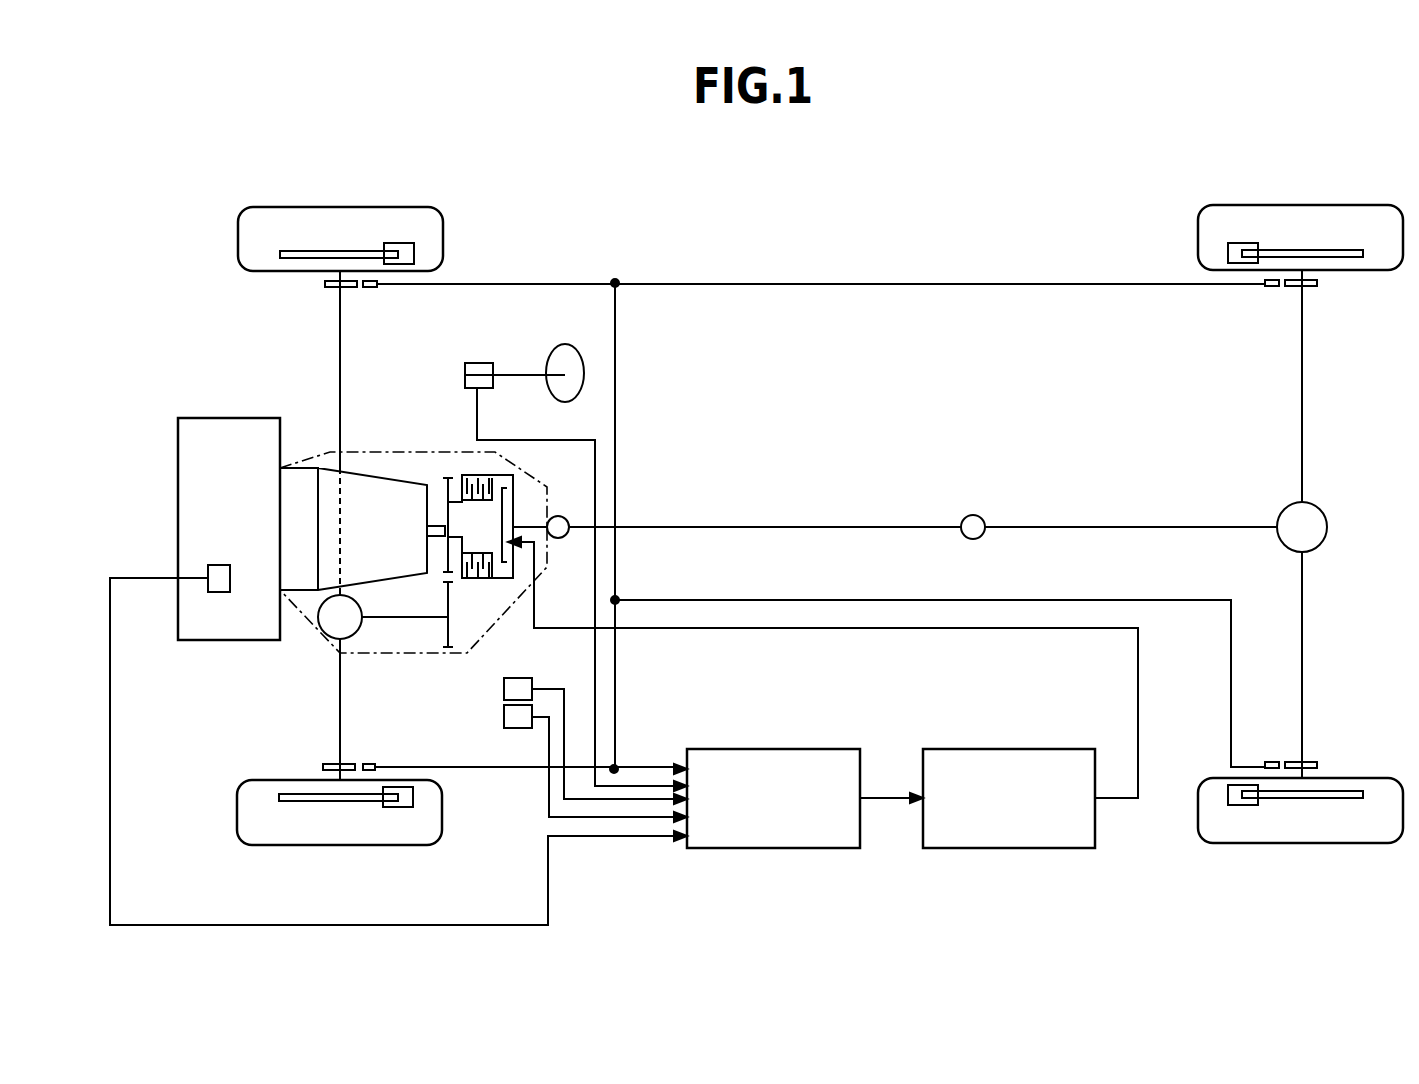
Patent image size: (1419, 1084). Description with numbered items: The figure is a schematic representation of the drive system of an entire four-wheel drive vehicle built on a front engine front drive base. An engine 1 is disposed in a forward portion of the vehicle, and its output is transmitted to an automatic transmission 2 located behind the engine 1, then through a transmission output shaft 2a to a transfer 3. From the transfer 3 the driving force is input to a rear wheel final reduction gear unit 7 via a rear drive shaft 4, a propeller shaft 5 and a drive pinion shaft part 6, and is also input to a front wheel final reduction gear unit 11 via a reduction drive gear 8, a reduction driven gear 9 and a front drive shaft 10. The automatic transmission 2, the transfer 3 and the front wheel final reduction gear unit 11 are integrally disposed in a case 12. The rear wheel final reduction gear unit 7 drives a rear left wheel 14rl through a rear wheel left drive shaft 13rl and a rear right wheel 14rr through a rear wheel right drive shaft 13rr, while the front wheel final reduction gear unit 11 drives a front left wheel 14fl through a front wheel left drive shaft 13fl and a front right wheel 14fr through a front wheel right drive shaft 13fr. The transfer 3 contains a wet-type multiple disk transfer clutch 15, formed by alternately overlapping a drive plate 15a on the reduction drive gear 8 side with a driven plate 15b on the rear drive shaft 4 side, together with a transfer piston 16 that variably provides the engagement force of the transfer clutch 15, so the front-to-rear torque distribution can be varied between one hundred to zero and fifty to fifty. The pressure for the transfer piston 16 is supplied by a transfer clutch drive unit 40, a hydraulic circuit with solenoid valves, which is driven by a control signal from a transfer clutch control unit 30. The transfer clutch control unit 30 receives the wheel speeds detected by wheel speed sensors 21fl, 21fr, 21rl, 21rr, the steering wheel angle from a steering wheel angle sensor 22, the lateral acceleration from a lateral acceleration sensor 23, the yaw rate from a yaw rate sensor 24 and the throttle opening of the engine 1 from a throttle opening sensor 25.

The engine 1 is at (178, 497).
The automatic transmission 2 is at (330, 467).
The transmission output shaft 2a is at (436, 525).
The transfer 3 is at (591, 525).
The rear drive shaft 4 is at (530, 524).
The propeller shaft 5 is at (800, 526).
The drive pinion shaft part 6 is at (1065, 526).
The rear wheel final reduction gear unit 7 is at (1329, 527).
The reduction drive gear 8 is at (445, 477).
The reduction driven gear 9 is at (442, 585).
The front drive shaft 10 is at (405, 619).
The front wheel final reduction gear unit 11 is at (328, 640).
The case 12 is at (372, 450).
The front wheel right drive shaft 13fr is at (339, 349).
The front wheel left drive shaft 13fl is at (339, 729).
The rear wheel right drive shaft 13rr is at (1304, 340).
The rear wheel left drive shaft 13rl is at (1304, 669).
The front right wheel 14fr is at (375, 206).
The front left wheel 14fl is at (343, 846).
The rear right wheel 14rr is at (1296, 204).
The rear left wheel 14rl is at (1308, 844).
The transfer clutch 15 is at (600, 480).
The drive plate 15a is at (515, 495).
The driven plate 15b is at (488, 493).
The transfer piston 16 is at (504, 493).
The wheel speed sensor 21fr is at (370, 288).
The wheel speed sensor 21fl is at (367, 763).
The wheel speed sensor 21rr is at (1272, 287).
The wheel speed sensor 21rl is at (1270, 761).
The steering wheel angle sensor 22 is at (478, 362).
The lateral acceleration sensor 23 is at (504, 690).
The yaw rate sensor 24 is at (504, 717).
The throttle opening sensor 25 is at (218, 564).
The transfer clutch control unit 30 is at (795, 748).
The transfer clutch drive unit 40 is at (1030, 748).